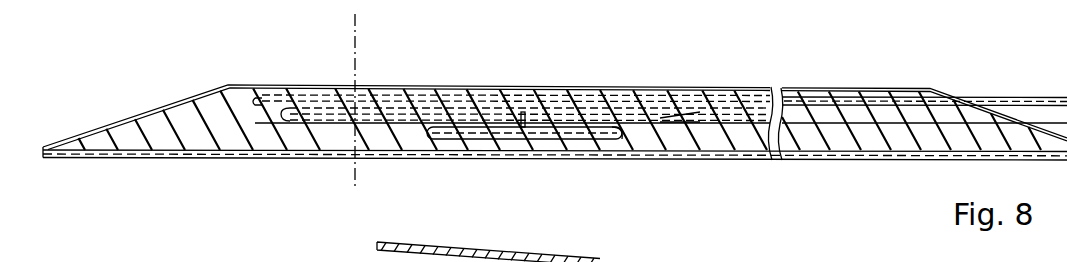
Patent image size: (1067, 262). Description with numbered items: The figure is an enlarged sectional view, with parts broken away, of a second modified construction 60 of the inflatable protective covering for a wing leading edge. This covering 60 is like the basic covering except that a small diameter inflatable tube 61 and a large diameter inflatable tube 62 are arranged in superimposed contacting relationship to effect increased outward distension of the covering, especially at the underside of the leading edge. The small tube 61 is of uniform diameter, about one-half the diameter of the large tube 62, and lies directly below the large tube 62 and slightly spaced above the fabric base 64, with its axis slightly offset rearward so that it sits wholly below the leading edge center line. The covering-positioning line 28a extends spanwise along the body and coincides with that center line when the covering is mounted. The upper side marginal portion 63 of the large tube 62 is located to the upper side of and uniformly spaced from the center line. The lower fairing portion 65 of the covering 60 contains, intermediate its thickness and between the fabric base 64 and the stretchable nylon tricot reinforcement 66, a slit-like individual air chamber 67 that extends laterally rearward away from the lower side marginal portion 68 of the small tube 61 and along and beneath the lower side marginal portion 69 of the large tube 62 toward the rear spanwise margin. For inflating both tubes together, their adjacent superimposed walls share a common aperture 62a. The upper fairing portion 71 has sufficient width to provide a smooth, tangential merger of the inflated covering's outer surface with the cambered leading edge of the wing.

The covering-positioning line 28a is at (360, 55).
The second modified construction of the covering 60 is at (950, 68).
The small diameter inflatable tube 61 is at (458, 140).
The large diameter inflatable tube 62 is at (570, 107).
The common aperture 62a is at (523, 128).
The upper side marginal portion of the large tube 63 is at (267, 100).
The fabric base 64 is at (207, 158).
The lower fairing portion 65 is at (990, 122).
The stretchable nylon tricot reinforcement 66 is at (805, 102).
The slit-like individual air chamber 67 is at (773, 138).
The lower side marginal portion of the small tube 68 is at (622, 134).
The lower side marginal portion of the large tube 69 is at (690, 118).
The upper fairing portion 71 is at (192, 114).